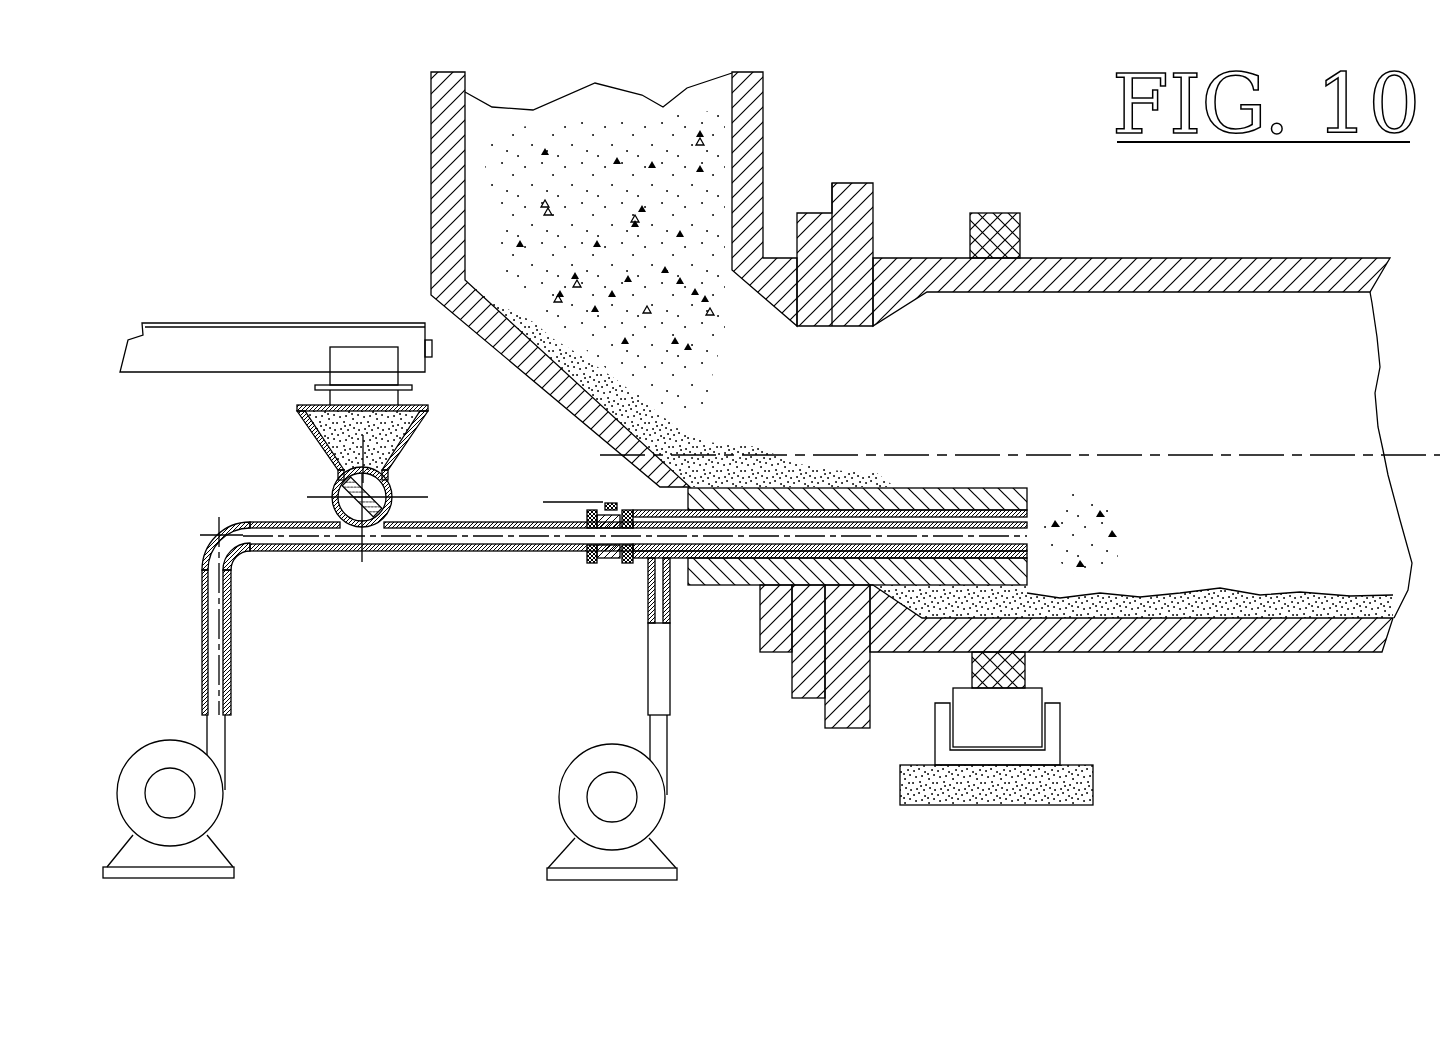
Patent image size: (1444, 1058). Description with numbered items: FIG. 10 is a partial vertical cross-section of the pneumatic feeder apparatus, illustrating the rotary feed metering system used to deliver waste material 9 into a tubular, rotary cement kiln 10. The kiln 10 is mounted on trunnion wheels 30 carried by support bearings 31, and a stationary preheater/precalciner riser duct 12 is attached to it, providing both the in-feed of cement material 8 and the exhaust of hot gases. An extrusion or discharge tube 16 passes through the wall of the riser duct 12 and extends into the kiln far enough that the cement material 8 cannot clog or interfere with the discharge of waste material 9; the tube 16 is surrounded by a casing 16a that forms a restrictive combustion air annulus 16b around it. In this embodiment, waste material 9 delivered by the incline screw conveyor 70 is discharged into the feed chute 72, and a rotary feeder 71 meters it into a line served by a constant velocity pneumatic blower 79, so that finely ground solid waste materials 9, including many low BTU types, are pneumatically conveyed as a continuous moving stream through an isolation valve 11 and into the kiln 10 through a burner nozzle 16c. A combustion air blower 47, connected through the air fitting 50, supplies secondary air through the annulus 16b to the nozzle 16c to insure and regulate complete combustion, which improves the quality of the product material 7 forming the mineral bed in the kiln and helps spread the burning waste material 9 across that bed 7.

The product material 7 is at (760, 452).
The cement material 8 is at (635, 202).
The waste material 9 is at (370, 452).
The kiln 10 is at (1265, 248).
The isolation valve 11 is at (598, 480).
The riser duct 12 is at (430, 188).
The extrusion or discharge tube 16 is at (978, 476).
The casing 16a is at (920, 510).
The combustion air annulus 16b is at (723, 553).
The burner nozzle 16c is at (1028, 532).
The trunnion wheels 30 is at (1022, 237).
The support bearings 31 is at (1060, 747).
The combustion air blower 47 is at (667, 807).
The air fitting 50 is at (645, 653).
The incline screw conveyor 70 is at (203, 323).
The rotary feeder 71 is at (312, 456).
The feed chute 72 is at (305, 420).
The pneumatic blower 79 is at (222, 812).